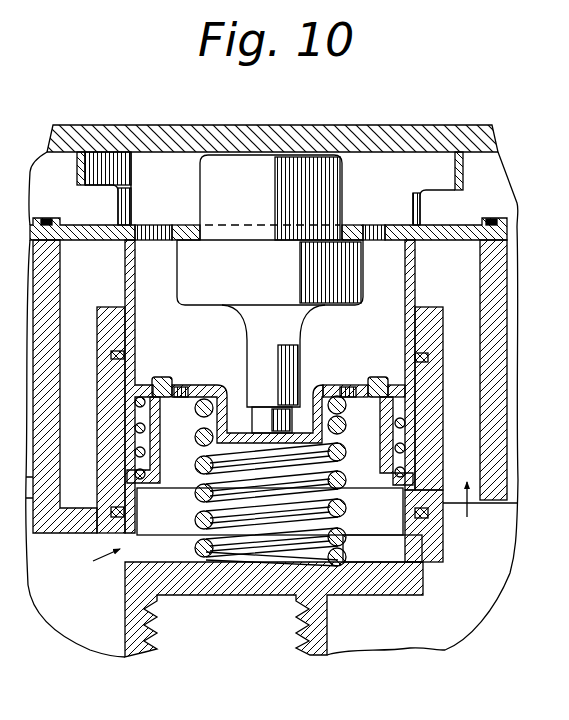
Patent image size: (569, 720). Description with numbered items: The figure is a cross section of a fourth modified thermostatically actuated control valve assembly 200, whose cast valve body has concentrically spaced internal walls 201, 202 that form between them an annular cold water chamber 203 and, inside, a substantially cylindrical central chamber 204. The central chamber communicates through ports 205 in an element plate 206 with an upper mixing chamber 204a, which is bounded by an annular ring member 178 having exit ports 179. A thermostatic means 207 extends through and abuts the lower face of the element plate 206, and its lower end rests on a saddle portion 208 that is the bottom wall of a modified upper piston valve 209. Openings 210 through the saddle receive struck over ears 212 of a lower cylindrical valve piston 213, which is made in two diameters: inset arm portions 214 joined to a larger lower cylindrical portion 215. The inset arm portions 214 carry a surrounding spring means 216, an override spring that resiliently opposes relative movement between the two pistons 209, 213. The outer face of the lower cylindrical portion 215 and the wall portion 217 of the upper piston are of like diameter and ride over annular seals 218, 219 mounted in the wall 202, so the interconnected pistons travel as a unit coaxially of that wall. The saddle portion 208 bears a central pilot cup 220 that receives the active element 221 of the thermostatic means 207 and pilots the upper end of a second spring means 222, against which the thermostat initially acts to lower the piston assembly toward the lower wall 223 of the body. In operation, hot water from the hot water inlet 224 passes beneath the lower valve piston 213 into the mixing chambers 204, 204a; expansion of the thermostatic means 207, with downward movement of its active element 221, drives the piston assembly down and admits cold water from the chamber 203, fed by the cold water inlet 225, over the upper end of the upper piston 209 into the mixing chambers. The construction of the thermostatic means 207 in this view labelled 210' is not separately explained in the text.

The control valve assembly 200 is at (130, 116).
The thermostatic means 207 is at (258, 184).
The annular ring member 178 is at (78, 170).
The exit ports 179 is at (118, 203).
The ports 205 is at (157, 234).
The upper mixing chamber 204a is at (405, 191).
The element plate 206 is at (460, 217).
The internal wall 201 is at (55, 276).
The internal wall 202 is at (100, 318).
The wall portion 217 is at (135, 282).
The annular cold water chamber 203 is at (470, 284).
The central chamber 204 is at (392, 336).
The piston valve 209 is at (133, 352).
The annular seal 218 is at (427, 358).
The annular seal 219 is at (428, 516).
The struck over ears 212 is at (163, 377).
The central pilot cup 220 is at (238, 396).
The cup flange 210' is at (354, 364).
The arm portions 214 is at (154, 441).
The saddle portion 208 is at (332, 390).
The spring means 216 is at (138, 452).
The openings 210 is at (273, 481).
The active element 221 is at (266, 420).
The lower cylindrical valve piston 213 is at (379, 491).
The second spring means 222 is at (346, 550).
The lower cylindrical portion 215 is at (133, 552).
The lower wall 223 is at (222, 592).
The hot water inlet 224 is at (75, 554).
The cold water inlet 225 is at (472, 552).